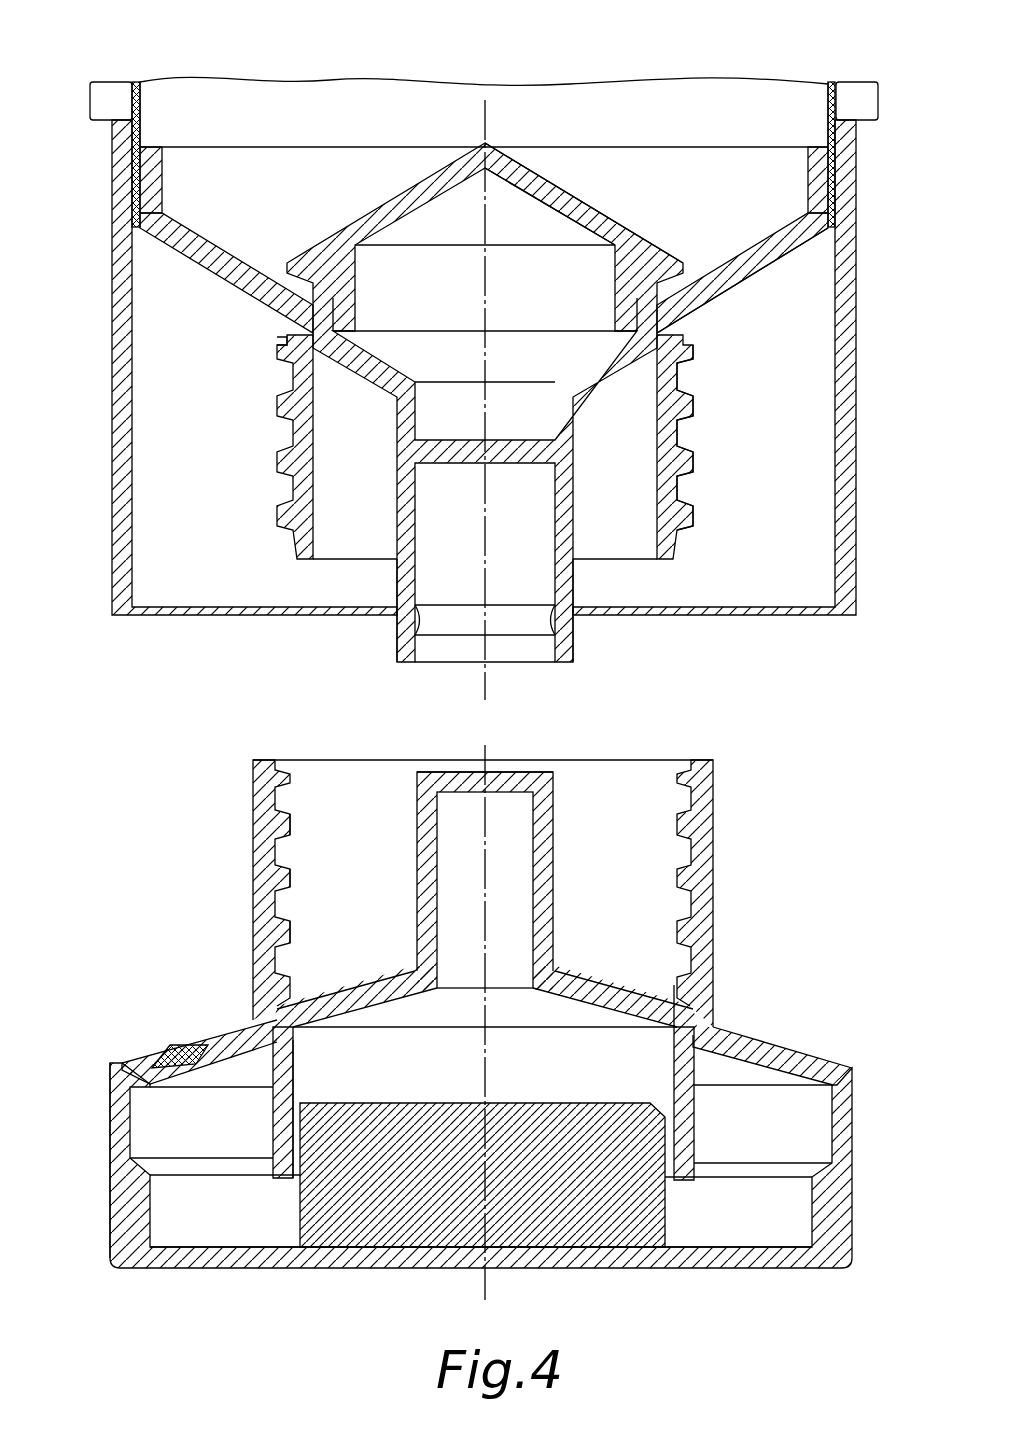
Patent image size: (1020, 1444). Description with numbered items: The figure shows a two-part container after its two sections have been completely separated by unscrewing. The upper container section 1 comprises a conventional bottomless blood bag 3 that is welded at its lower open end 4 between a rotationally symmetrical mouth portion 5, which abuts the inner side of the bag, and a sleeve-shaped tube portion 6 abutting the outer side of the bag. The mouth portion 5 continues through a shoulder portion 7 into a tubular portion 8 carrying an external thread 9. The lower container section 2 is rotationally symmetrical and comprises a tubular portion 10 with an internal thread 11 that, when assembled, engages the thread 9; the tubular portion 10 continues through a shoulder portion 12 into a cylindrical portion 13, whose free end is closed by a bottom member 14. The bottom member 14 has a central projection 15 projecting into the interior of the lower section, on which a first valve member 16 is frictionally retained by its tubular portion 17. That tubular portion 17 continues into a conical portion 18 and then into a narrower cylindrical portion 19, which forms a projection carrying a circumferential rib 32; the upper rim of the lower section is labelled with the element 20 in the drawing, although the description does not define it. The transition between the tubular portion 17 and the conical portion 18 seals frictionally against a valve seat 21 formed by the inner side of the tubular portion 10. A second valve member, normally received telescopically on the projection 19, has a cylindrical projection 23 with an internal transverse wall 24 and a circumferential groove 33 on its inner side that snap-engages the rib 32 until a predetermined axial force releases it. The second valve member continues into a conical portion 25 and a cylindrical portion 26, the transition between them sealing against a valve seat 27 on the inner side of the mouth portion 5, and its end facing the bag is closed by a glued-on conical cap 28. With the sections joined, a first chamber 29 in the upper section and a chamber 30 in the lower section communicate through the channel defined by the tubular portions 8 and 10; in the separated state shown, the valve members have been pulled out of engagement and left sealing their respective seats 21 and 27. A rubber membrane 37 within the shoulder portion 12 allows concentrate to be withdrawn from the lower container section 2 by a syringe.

The upper container section 1 is at (856, 385).
The lower container section 2 is at (860, 1115).
The blood bag 3 is at (780, 95).
The lower open end 4 is at (833, 185).
The mouth portion 5 is at (773, 258).
The tube portion 6 is at (845, 463).
The shoulder portion 7 is at (745, 270).
The tubular portion 8 is at (662, 512).
The thread 9 is at (677, 462).
The tubular portion 10 is at (265, 930).
The internal thread 11 is at (282, 880).
The shoulder portion 12 is at (763, 1057).
The cylindrical portion 13 is at (113, 1172).
The bottom member 14 is at (755, 1262).
The projection 15 is at (375, 1235).
The first valve member 16 is at (273, 1120).
The tubular portion 17 is at (683, 1140).
The conical portion 18 is at (618, 984).
The cylindrical portion 19 is at (553, 872).
The top edge 20 is at (510, 770).
The valve seat 21 is at (262, 1020).
The cylindrical projection 23 is at (567, 580).
The transverse wall 24 is at (485, 402).
The conical portion 25 is at (370, 367).
The cylindrical portion 26 is at (305, 312).
The valve seat 27 is at (283, 340).
The conical cap 28 is at (540, 190).
The first chamber 29 is at (320, 105).
The chamber 30 is at (750, 1130).
The circumferential rib 32 is at (555, 930).
The circumferential groove 33 is at (423, 623).
The rubber membrane 37 is at (180, 1058).